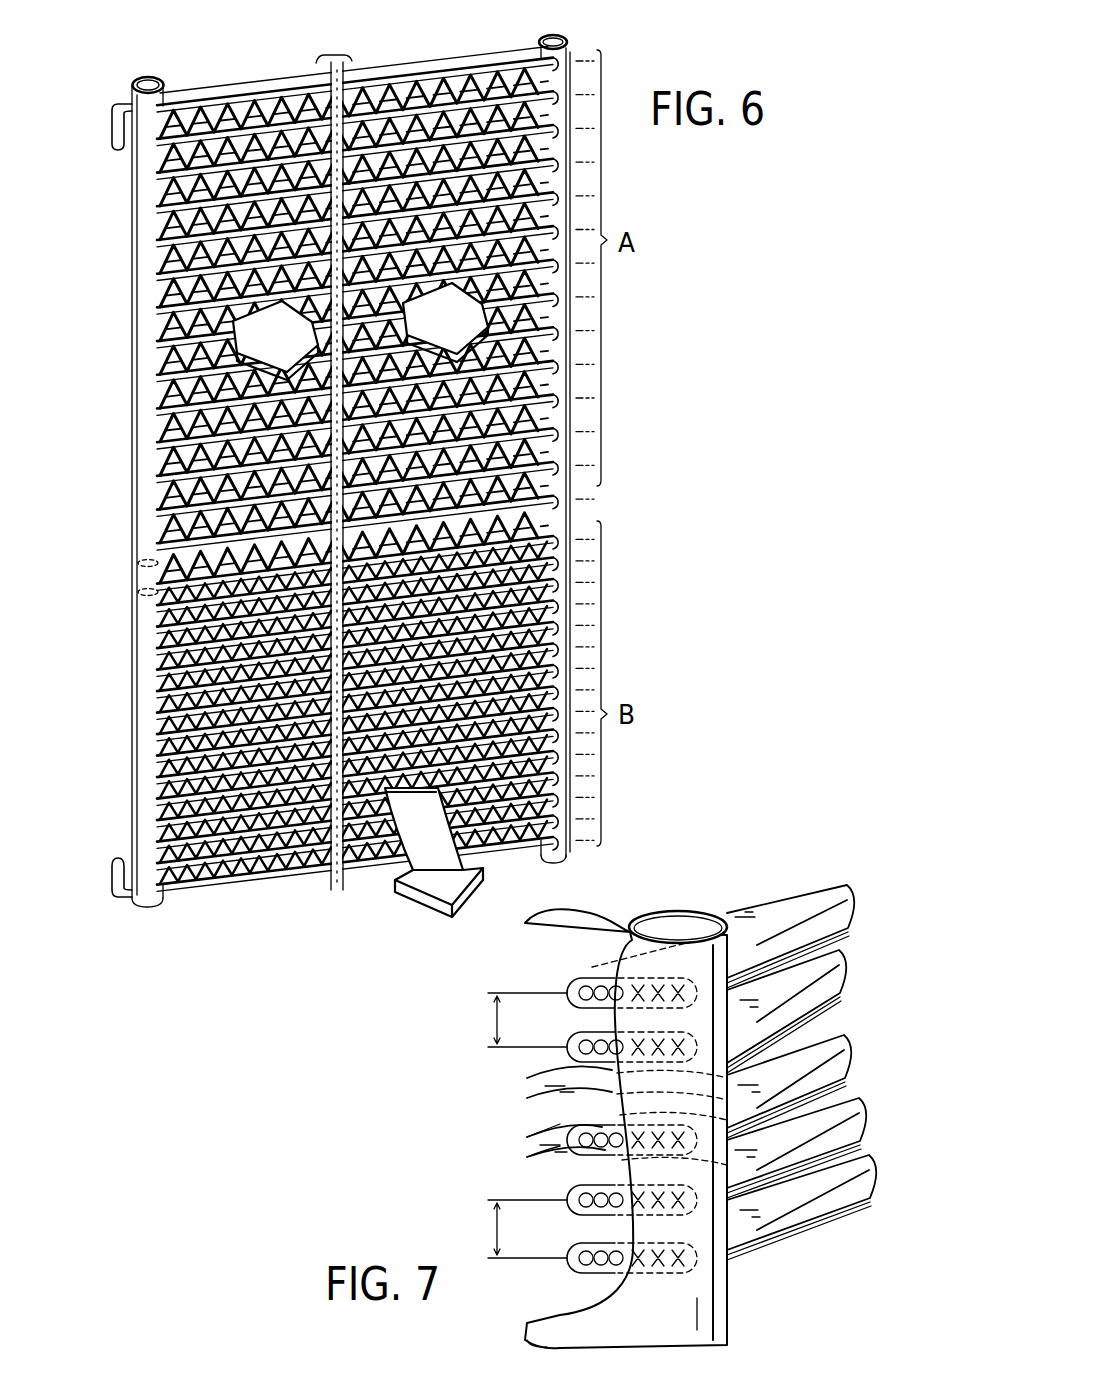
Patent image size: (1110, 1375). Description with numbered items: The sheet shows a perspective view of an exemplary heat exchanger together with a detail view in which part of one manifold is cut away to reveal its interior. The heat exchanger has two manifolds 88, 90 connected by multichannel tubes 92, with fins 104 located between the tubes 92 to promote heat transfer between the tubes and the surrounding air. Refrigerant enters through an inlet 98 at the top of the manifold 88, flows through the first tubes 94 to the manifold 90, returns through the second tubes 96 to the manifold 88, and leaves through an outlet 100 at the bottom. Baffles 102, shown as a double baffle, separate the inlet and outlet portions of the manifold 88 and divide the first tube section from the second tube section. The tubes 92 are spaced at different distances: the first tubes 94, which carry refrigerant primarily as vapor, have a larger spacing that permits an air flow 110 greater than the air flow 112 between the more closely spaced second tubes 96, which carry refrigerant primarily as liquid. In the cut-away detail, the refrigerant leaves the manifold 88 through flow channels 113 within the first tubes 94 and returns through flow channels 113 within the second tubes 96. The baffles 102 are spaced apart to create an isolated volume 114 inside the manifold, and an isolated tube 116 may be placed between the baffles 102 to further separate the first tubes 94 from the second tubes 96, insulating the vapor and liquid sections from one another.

In FIG. 6, the manifold 88 is at (140, 97).
In FIG. 7, the manifold 88 is at (532, 962).
In FIG. 6, the manifold 90 is at (572, 46).
In FIG. 6, the multichannel tubes 92 is at (382, 100).
In FIG. 6, the first tubes 94 is at (218, 100).
In FIG. 7, the first tubes 94 is at (797, 963).
In FIG. 6, the second tubes 96 is at (559, 549).
In FIG. 7, the second tubes 96 is at (793, 1135).
In FIG. 6, the inlet 98 is at (113, 128).
In FIG. 6, the outlet 100 is at (115, 868).
In FIG. 6, the baffles 102 is at (150, 592).
In FIG. 7, the baffles 102 is at (540, 1083).
In FIG. 6, the fins 104 is at (256, 104).
In FIG. 6, the air flow 110 is at (292, 356).
In FIG. 6, the air flow 112 is at (454, 866).
In FIG. 7, the flow channels 113 is at (590, 1040).
In FIG. 7, the isolated volume 114 is at (540, 1115).
In FIG. 7, the isolated tube 116 is at (545, 1128).